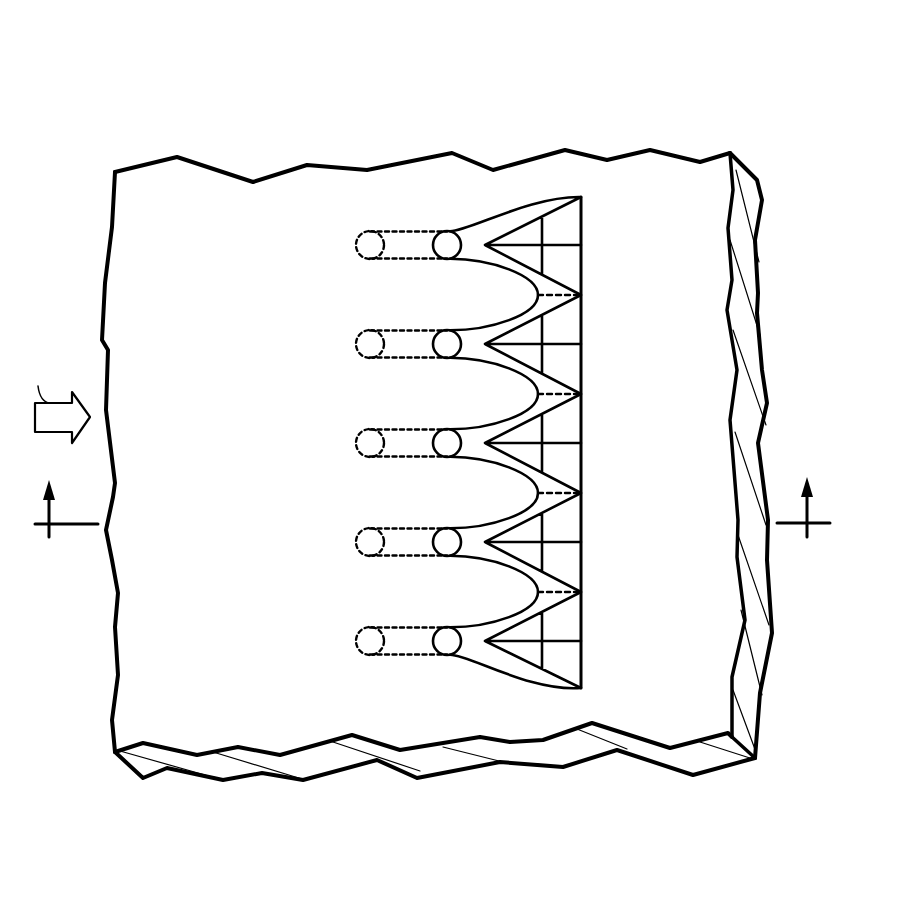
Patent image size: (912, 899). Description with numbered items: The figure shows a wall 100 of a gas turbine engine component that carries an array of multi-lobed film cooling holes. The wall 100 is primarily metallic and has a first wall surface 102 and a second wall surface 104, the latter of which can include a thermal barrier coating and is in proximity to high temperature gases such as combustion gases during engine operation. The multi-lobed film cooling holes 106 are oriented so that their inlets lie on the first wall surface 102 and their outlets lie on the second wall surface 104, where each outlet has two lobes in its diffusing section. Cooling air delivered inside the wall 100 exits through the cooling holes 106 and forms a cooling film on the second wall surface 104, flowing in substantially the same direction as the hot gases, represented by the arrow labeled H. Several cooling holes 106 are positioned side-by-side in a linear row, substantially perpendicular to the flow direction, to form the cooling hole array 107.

The wall 100 is at (132, 118).
The first wall surface 102 is at (760, 307).
The second wall surface 104 is at (417, 452).
The multi-lobed film cooling holes 106 is at (433, 245).
The cooling hole array 107 is at (417, 672).